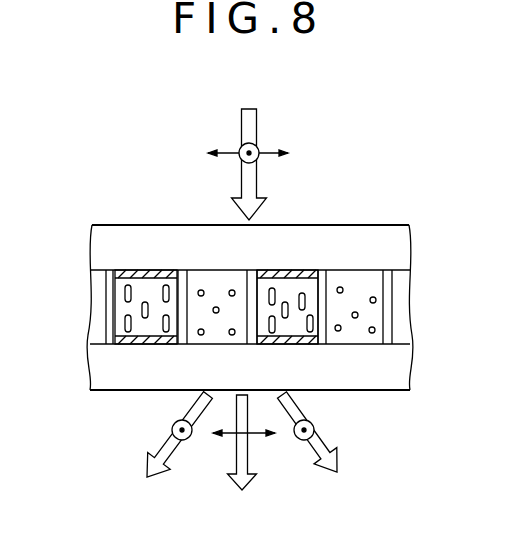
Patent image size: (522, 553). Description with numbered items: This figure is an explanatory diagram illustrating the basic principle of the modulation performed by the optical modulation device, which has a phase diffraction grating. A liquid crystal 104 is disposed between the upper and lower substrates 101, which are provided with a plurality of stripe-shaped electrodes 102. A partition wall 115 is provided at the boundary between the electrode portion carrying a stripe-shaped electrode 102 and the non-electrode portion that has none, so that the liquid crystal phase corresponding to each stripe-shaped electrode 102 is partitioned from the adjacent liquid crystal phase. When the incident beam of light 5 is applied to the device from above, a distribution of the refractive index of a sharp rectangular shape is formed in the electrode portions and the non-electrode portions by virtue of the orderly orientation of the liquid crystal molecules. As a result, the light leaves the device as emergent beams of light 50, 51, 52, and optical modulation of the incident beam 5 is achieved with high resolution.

The incident beam of light 5 is at (257, 123).
The substrate 101 is at (400, 249).
The stripe-shaped electrode 102 is at (128, 272).
The liquid crystal 104 is at (373, 312).
The partition wall 115 is at (322, 328).
The emergent beam of light 50 is at (248, 470).
The emergent beam of light 51 is at (166, 465).
The emergent beam of light 52 is at (331, 450).